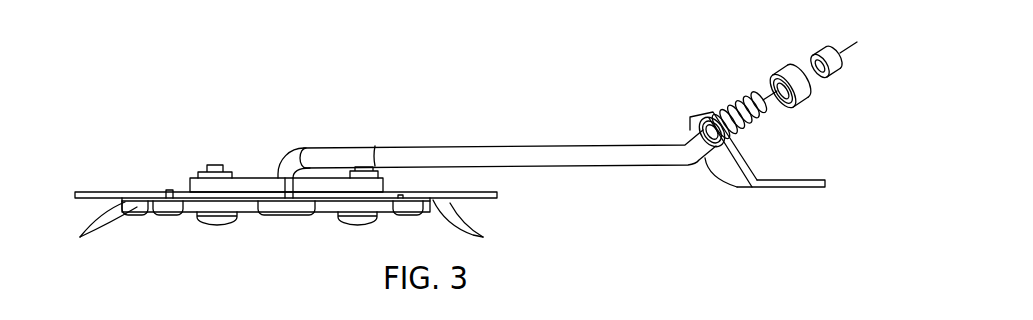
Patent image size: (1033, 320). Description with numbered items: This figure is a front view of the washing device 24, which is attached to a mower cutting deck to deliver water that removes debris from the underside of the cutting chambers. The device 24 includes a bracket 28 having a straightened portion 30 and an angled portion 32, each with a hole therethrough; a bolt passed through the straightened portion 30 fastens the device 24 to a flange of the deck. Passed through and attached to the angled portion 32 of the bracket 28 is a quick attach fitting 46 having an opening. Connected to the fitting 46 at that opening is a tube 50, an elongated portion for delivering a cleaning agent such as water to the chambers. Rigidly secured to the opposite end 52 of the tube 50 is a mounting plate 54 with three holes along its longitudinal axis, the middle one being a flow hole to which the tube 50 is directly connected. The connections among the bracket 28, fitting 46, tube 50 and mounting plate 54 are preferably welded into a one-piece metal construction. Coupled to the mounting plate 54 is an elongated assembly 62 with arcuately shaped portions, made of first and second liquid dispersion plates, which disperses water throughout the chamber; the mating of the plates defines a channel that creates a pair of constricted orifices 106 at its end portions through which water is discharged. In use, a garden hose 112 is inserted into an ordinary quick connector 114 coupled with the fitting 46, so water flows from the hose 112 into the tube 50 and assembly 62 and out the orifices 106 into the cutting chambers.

The washing device 24 is at (258, 95).
The elongated assembly 62 is at (130, 155).
The mounting plate 54 is at (247, 178).
The opposite end 52 is at (288, 156).
The tube 50 is at (587, 147).
The orifices 106 is at (82, 236).
The bracket 28 is at (743, 190).
The straightened portion 30 is at (807, 190).
The angled portion 32 is at (730, 168).
The quick attach fitting 46 is at (746, 98).
The quick connector 114 is at (777, 63).
The garden hose 112 is at (843, 88).